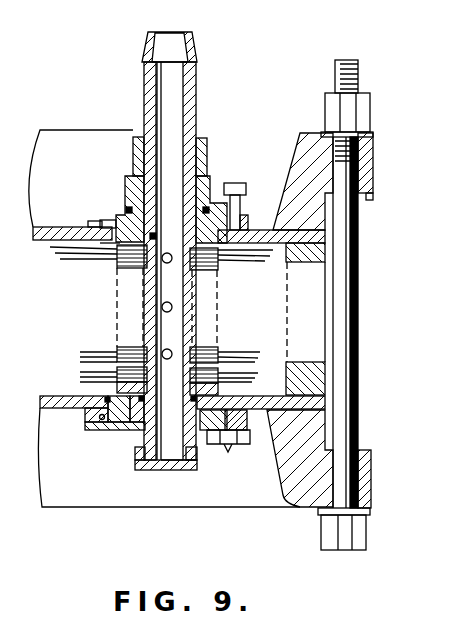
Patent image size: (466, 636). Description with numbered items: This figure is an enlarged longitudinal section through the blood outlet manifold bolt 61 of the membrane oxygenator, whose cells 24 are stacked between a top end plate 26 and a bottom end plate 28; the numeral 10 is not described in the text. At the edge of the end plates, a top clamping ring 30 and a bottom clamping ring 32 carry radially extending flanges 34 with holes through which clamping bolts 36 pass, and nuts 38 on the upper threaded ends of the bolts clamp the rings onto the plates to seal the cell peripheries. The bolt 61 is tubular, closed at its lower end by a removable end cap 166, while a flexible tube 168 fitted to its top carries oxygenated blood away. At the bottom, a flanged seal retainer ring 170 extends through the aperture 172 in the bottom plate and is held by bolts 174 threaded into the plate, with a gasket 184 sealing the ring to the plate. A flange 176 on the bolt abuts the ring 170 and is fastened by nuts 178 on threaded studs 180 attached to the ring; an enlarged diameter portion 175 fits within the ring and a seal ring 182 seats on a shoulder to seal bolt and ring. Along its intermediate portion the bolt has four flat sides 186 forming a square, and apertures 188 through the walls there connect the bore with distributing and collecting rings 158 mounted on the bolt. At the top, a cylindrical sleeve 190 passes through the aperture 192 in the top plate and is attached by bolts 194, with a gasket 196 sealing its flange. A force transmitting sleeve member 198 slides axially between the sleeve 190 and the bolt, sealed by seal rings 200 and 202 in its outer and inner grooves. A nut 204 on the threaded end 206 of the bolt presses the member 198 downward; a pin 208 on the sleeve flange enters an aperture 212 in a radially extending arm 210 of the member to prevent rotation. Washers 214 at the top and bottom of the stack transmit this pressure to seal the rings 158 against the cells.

The probe assembly 10 is at (123, 112).
The cells 24 is at (76, 362).
The top end plate 26 is at (298, 245).
The bottom end plate 28 is at (295, 363).
The top clamping ring 30 is at (296, 133).
The bottom clamping ring 32 is at (296, 500).
The flanges 34 is at (365, 198).
The clamping bolts 36 is at (353, 424).
The nuts 38 is at (364, 108).
The blood outlet manifold bolt 61 is at (160, 309).
The distributing and collecting rings 158 is at (212, 265).
The end cap 166 is at (134, 466).
The flexible tube 168 is at (192, 53).
The flanged seal retainer ring 170 is at (150, 418).
The aperture 172 is at (223, 441).
The bolts 174 is at (90, 424).
The enlarged diameter portion 175 is at (176, 463).
The flange 176 is at (100, 430).
The nuts 178 is at (245, 446).
The threaded studs 180 is at (229, 453).
The seal ring 182 is at (152, 399).
The gasket 184 is at (86, 409).
The flat sides 186 is at (146, 297).
The apertures 188 is at (190, 286).
The cylindrical sleeve 190 is at (100, 220).
The aperture 192 is at (113, 251).
The bolts 194 is at (110, 243).
The gasket 196 is at (90, 224).
The force transmitting sleeve member 198 is at (130, 183).
The seal ring 200 is at (127, 207).
The seal ring 202 is at (154, 237).
The nut 204 is at (134, 142).
The threaded end 206 is at (199, 138).
The pin 208 is at (242, 212).
The radially extending arm 210 is at (207, 178).
The aperture 212 is at (245, 180).
The washers 214 is at (226, 251).